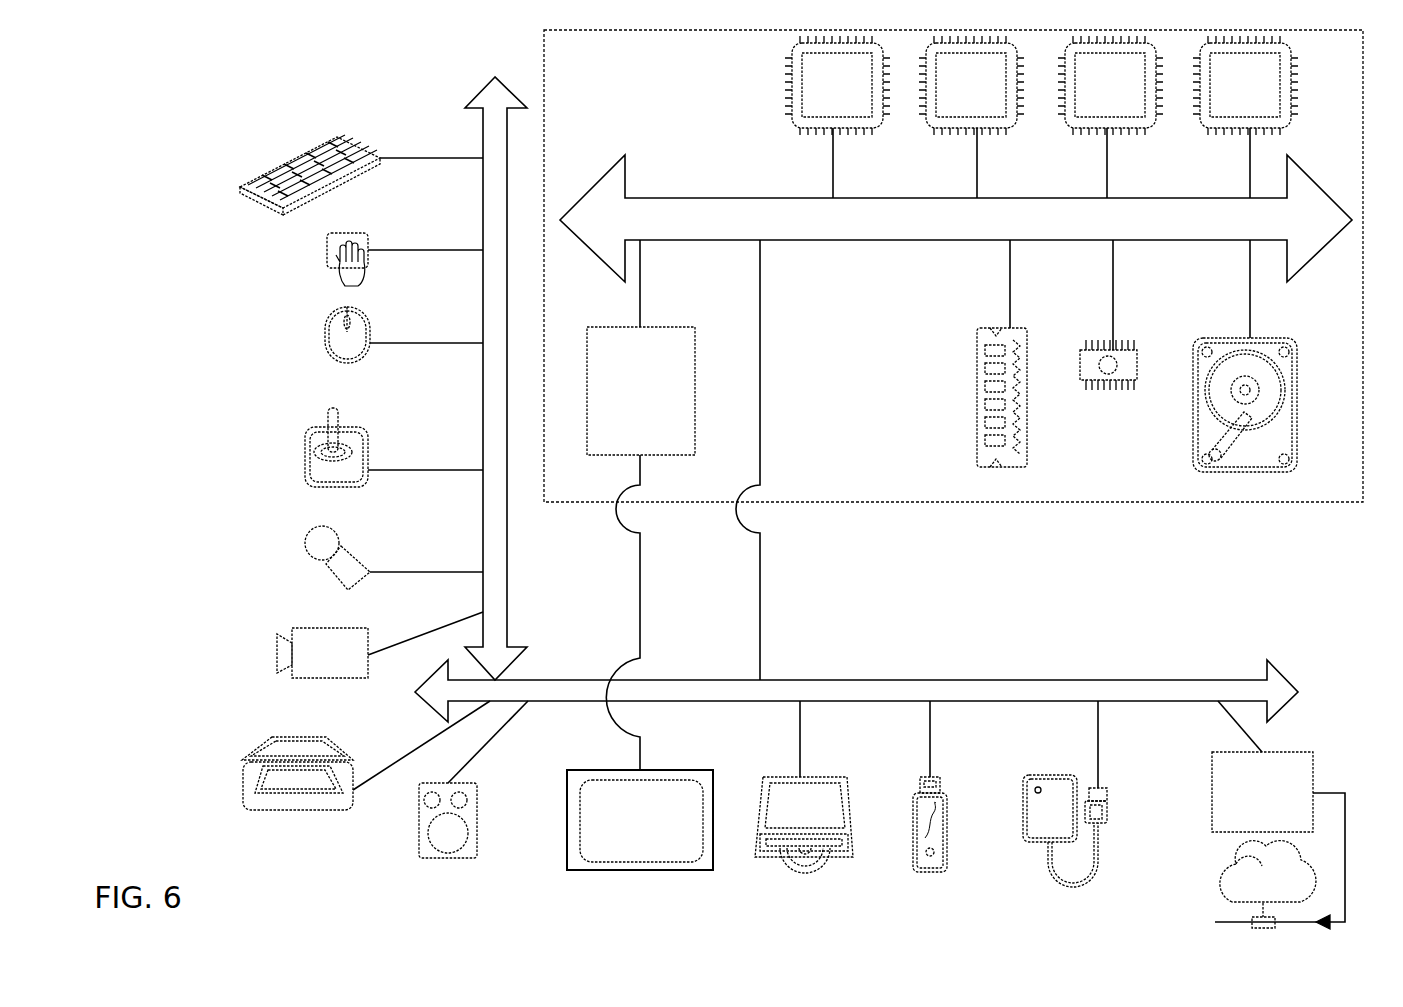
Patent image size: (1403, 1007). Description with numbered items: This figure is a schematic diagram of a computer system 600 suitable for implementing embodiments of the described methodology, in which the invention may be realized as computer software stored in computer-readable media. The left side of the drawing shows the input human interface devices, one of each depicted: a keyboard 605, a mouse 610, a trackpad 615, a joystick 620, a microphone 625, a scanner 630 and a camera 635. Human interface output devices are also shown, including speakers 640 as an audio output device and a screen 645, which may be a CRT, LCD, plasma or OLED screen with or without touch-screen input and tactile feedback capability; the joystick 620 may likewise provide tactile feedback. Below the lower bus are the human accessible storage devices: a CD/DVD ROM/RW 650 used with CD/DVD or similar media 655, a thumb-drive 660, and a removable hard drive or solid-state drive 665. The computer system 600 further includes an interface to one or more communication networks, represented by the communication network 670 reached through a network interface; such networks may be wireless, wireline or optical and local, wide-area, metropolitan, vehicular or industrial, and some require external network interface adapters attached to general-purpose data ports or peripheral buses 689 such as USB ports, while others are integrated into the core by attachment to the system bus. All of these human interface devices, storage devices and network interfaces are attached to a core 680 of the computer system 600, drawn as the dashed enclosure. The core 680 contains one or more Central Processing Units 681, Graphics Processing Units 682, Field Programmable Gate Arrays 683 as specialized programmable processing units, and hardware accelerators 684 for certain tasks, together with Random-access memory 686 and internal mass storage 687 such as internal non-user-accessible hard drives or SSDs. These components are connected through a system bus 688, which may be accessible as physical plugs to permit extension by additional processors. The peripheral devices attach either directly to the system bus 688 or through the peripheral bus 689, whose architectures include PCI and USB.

The computer system 600 is at (264, 77).
The keyboard 605 is at (318, 175).
The mouse 610 is at (325, 335).
The trackpad 615 is at (319, 260).
The joystick 620 is at (350, 455).
The microphone 625 is at (348, 558).
The scanner 630 is at (324, 756).
The camera 635 is at (337, 649).
The speakers 640 is at (473, 819).
The touch screen 645 is at (640, 859).
The CD/DVD ROM/RW 650 is at (845, 890).
The CD/DVD media 655 is at (804, 824).
The thumb-drive 660 is at (950, 822).
The removable hard drive or solid-state drive 665 is at (1059, 813).
The network 670 is at (1220, 884).
The core 680 is at (767, 505).
The Central Processing Unit 681 is at (837, 117).
The Graphics Processing Unit 682 is at (971, 117).
The Field Programmable Gate Array 683 is at (1110, 253).
The hardware accelerator 684 is at (1269, 482).
The Random-access memory 686 is at (946, 353).
The internal mass storage 687 is at (1225, 356).
The system bus 688 is at (956, 218).
The peripheral bus 689 is at (807, 399).